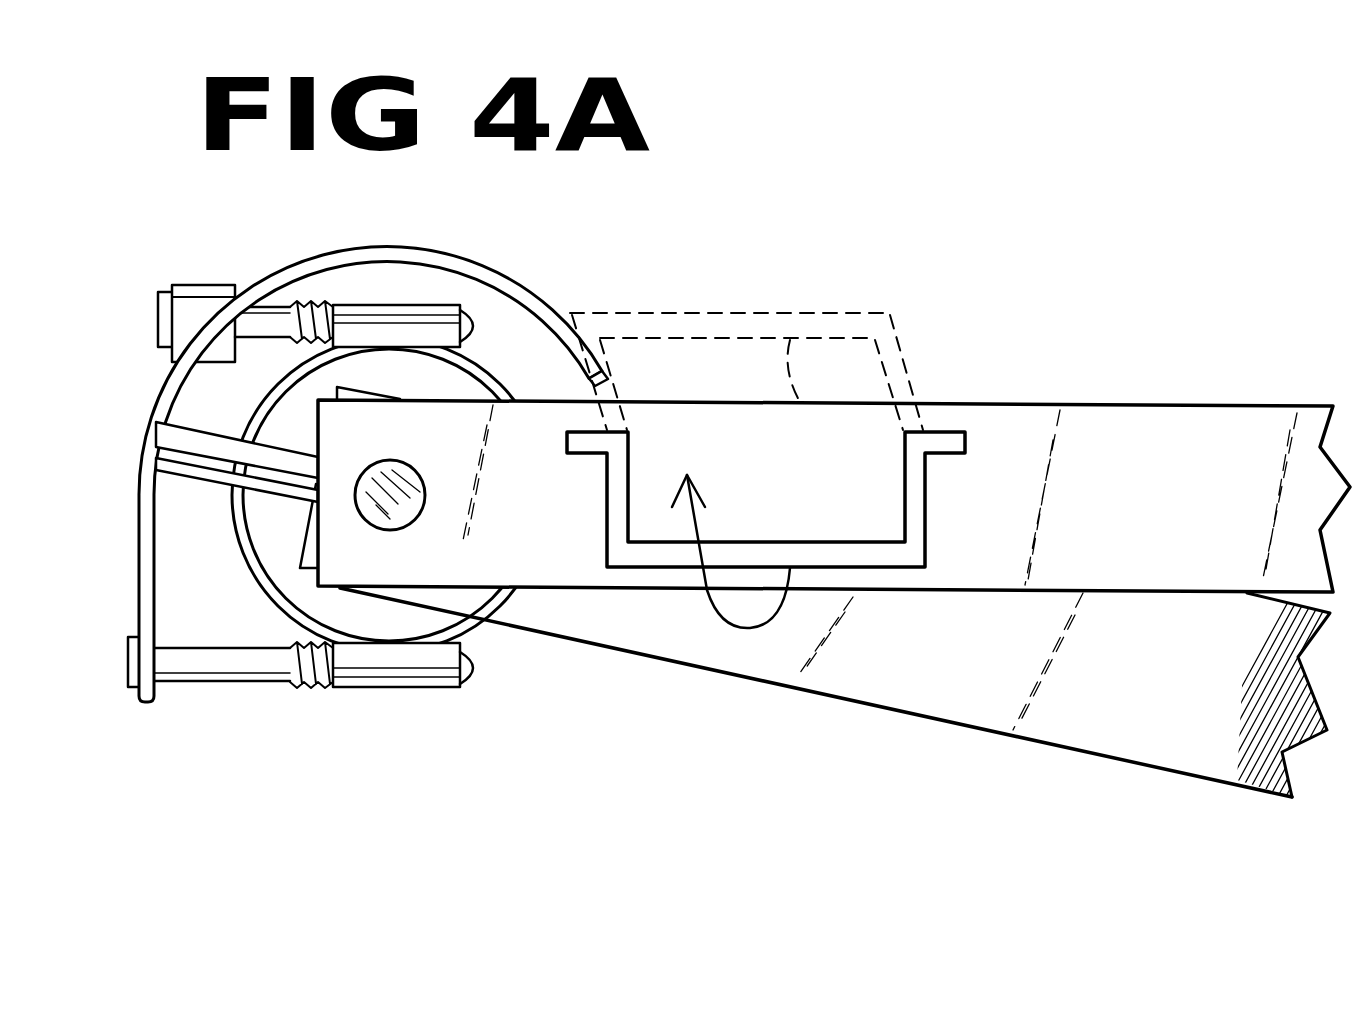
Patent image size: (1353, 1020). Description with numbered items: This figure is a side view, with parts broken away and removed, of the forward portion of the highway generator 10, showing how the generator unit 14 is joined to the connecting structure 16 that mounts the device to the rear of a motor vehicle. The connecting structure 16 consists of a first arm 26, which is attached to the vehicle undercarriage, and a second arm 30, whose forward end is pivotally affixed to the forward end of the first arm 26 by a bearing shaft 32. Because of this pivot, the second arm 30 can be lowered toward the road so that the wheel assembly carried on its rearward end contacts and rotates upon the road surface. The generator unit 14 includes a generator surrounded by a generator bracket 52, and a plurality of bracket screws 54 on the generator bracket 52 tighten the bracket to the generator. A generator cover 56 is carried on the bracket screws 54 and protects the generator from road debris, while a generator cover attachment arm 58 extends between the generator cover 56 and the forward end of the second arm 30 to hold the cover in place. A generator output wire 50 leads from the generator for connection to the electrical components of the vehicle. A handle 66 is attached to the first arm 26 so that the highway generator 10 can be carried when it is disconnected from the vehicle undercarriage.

The highway generator 10 is at (660, 282).
The generator unit 14 is at (382, 322).
The connecting structure 16 is at (1055, 385).
The first arm 26 is at (1228, 432).
The second arm 30 is at (932, 675).
The bearing shaft 32 is at (382, 475).
The generator output wire 50 is at (273, 538).
The generator bracket 52 is at (486, 373).
The bracket screws 54 is at (300, 306).
The generator cover 56 is at (153, 425).
The generator cover attachment arm 58 is at (202, 462).
The handle 66 is at (910, 465).